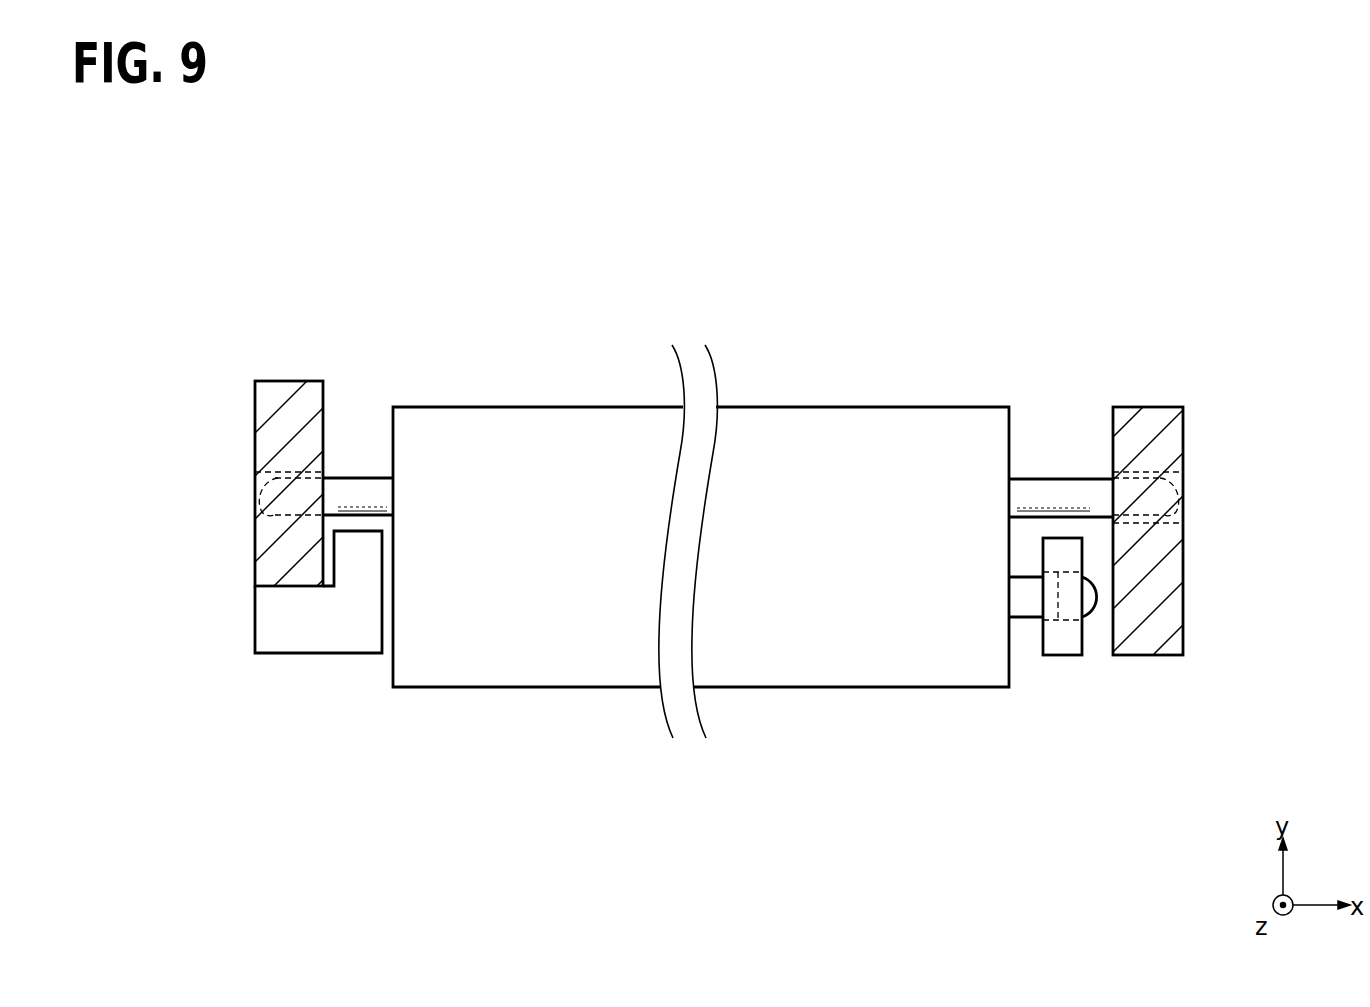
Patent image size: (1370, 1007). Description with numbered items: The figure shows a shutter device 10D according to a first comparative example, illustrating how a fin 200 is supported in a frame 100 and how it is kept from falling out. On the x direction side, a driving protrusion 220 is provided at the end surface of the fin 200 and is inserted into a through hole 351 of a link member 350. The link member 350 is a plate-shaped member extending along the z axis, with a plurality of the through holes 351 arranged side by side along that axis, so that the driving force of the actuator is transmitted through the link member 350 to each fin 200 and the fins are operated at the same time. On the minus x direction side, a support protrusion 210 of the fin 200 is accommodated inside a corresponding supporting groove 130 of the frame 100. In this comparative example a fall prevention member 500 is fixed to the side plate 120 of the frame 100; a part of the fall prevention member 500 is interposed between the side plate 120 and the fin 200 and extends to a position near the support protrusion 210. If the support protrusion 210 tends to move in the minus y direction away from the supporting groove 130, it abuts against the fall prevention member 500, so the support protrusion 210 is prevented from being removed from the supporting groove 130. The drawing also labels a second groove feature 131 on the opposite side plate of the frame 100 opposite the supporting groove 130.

The shutter device 10D is at (287, 205).
The frame 100 is at (282, 380).
The side plate 120 is at (719, 531).
The supporting groove 130 is at (257, 507).
The second groove 131 is at (1184, 497).
The fin 200 is at (541, 432).
The support protrusion 210 is at (352, 478).
The driving protrusion 220 is at (1025, 577).
The link member 350 is at (1065, 657).
The through hole 351 is at (1058, 575).
The fall prevention member 500 is at (292, 653).